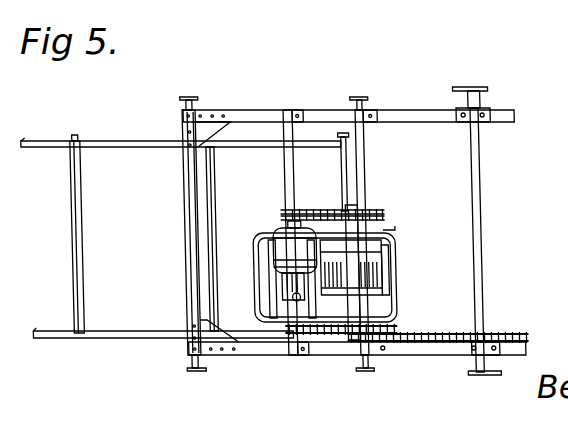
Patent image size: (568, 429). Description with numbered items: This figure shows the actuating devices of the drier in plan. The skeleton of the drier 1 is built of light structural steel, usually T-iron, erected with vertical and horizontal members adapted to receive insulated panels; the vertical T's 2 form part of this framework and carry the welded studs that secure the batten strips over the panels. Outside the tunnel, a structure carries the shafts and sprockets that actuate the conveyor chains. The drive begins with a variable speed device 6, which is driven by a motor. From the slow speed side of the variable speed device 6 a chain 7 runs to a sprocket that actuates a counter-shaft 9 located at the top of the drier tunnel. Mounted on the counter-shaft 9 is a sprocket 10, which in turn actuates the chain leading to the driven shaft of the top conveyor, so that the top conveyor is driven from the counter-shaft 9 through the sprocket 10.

The skeleton of the drier 1 is at (115, 148).
The vertical T's 2 is at (78, 340).
The variable speed device 6 is at (392, 280).
The chain 7 is at (428, 342).
The counter-shaft 9 is at (472, 243).
The sprocket 10 is at (478, 375).